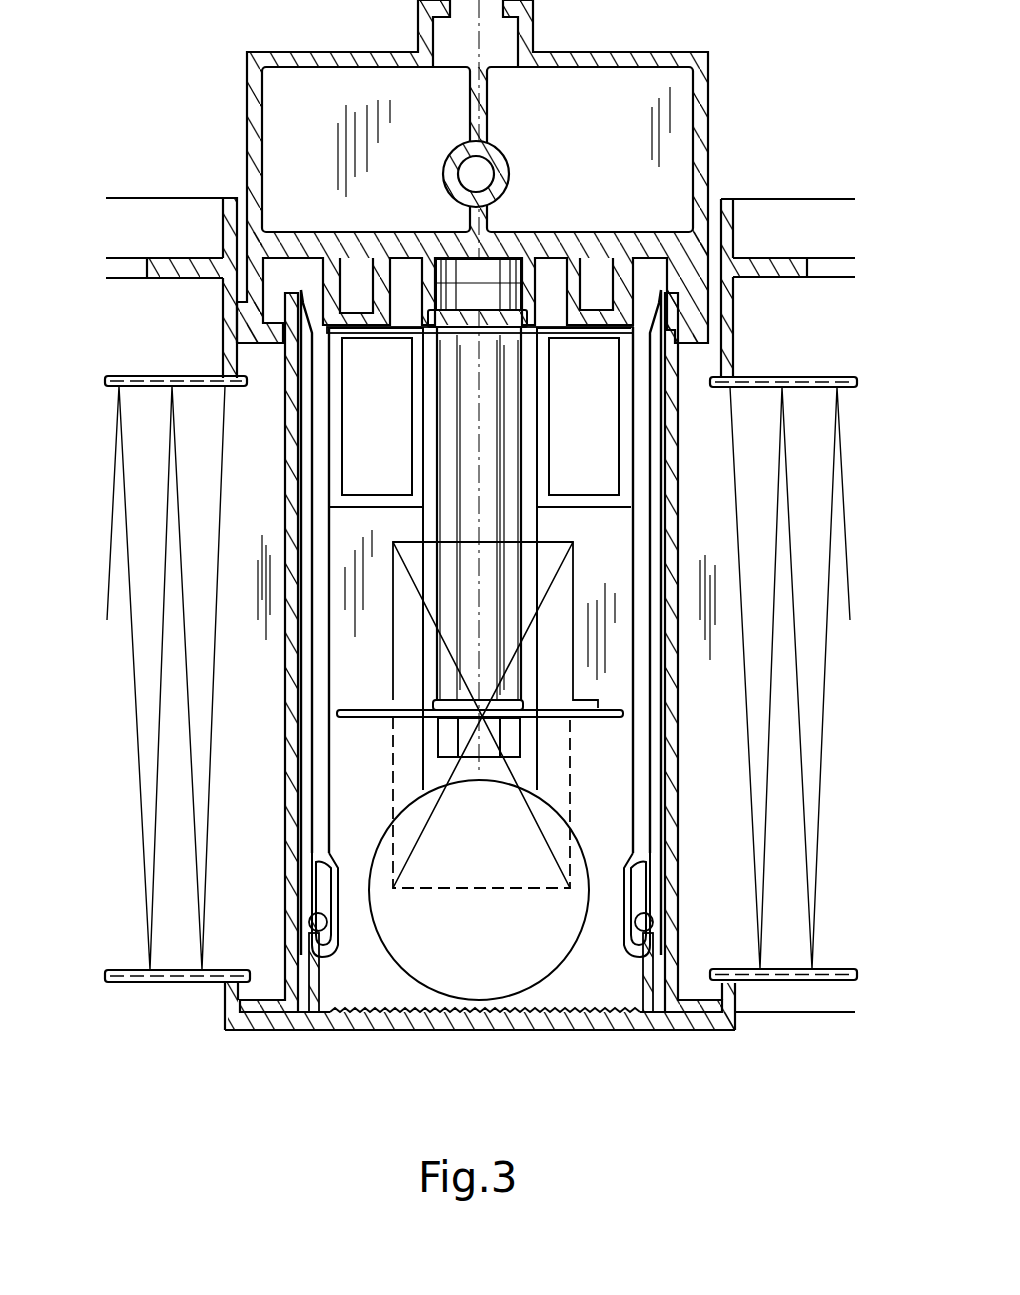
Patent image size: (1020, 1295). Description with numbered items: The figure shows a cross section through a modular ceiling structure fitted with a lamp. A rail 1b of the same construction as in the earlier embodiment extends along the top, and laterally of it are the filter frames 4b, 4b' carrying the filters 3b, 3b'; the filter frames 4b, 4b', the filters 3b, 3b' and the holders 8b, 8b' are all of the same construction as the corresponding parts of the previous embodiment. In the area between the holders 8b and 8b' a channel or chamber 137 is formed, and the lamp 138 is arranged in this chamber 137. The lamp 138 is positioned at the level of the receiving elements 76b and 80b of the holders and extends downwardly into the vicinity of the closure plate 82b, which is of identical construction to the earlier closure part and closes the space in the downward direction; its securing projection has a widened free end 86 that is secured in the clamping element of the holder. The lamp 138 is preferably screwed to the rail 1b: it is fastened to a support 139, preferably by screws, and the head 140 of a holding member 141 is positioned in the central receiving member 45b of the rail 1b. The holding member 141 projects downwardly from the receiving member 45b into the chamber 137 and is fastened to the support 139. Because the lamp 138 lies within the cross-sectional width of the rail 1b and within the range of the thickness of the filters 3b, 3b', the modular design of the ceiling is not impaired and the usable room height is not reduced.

The rail 1b is at (710, 136).
The filter frame 4b is at (793, 572).
The filter frame 4b' is at (172, 571).
The filter 3b is at (818, 660).
The filter 3b' is at (165, 645).
The head 140 is at (477, 298).
The central receiving member 45b is at (477, 343).
The holding member 141 is at (515, 441).
The channel or chamber 137 is at (605, 577).
The holder 8b is at (791, 652).
The holder 8b' is at (175, 652).
The support 139 is at (623, 714).
The lamp 138 is at (585, 850).
The receiving element 76b is at (647, 855).
The receiving element 80b is at (310, 855).
The closure plate 82b is at (583, 1032).
The widened free end 86 is at (397, 1030).